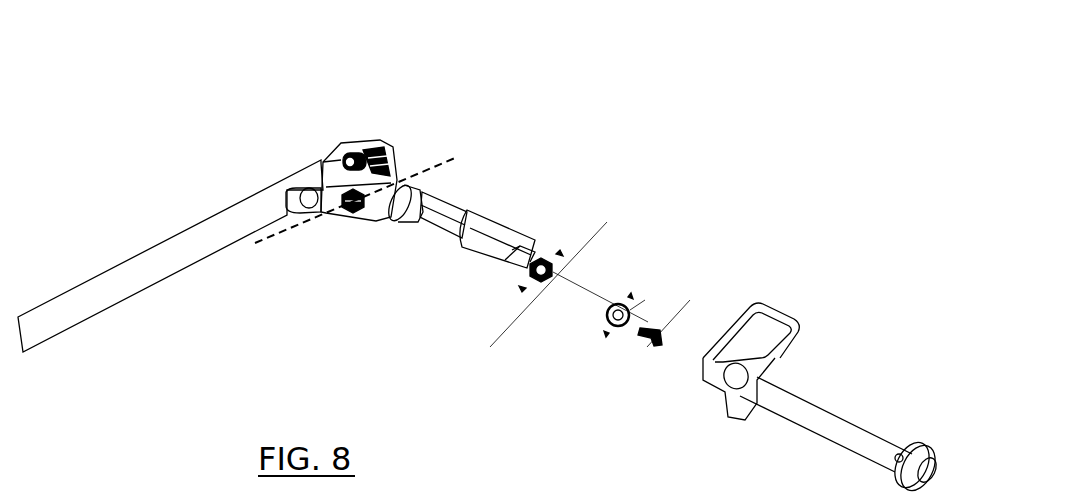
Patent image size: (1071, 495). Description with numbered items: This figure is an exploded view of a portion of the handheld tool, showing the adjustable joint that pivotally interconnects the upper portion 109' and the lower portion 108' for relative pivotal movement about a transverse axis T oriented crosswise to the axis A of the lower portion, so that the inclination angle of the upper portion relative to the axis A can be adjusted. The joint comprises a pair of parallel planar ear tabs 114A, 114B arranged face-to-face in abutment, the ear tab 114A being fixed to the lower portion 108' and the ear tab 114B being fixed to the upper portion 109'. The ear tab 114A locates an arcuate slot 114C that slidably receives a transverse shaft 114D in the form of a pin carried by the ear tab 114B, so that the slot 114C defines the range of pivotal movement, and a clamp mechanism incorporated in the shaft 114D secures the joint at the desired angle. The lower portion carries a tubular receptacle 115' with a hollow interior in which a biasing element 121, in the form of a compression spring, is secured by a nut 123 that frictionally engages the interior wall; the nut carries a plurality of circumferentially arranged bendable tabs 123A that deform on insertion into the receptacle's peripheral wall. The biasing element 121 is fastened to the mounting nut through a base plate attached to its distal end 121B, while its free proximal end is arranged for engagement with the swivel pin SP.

The upper portion 109' is at (170, 254).
The ear tab 114B is at (325, 173).
The transverse shaft 114D is at (378, 100).
The arcuate slot 114C is at (394, 174).
The ear tab 114A is at (378, 210).
The transverse axis T is at (285, 230).
The lower portion 108' is at (482, 150).
The receptacle 115' is at (520, 199).
The axis A is at (447, 217).
The nut 123 is at (490, 347).
The bendable tabs 123A is at (620, 266).
The biasing element 121 is at (673, 257).
The distal end 121B is at (673, 267).
The swivel pin SP is at (795, 306).